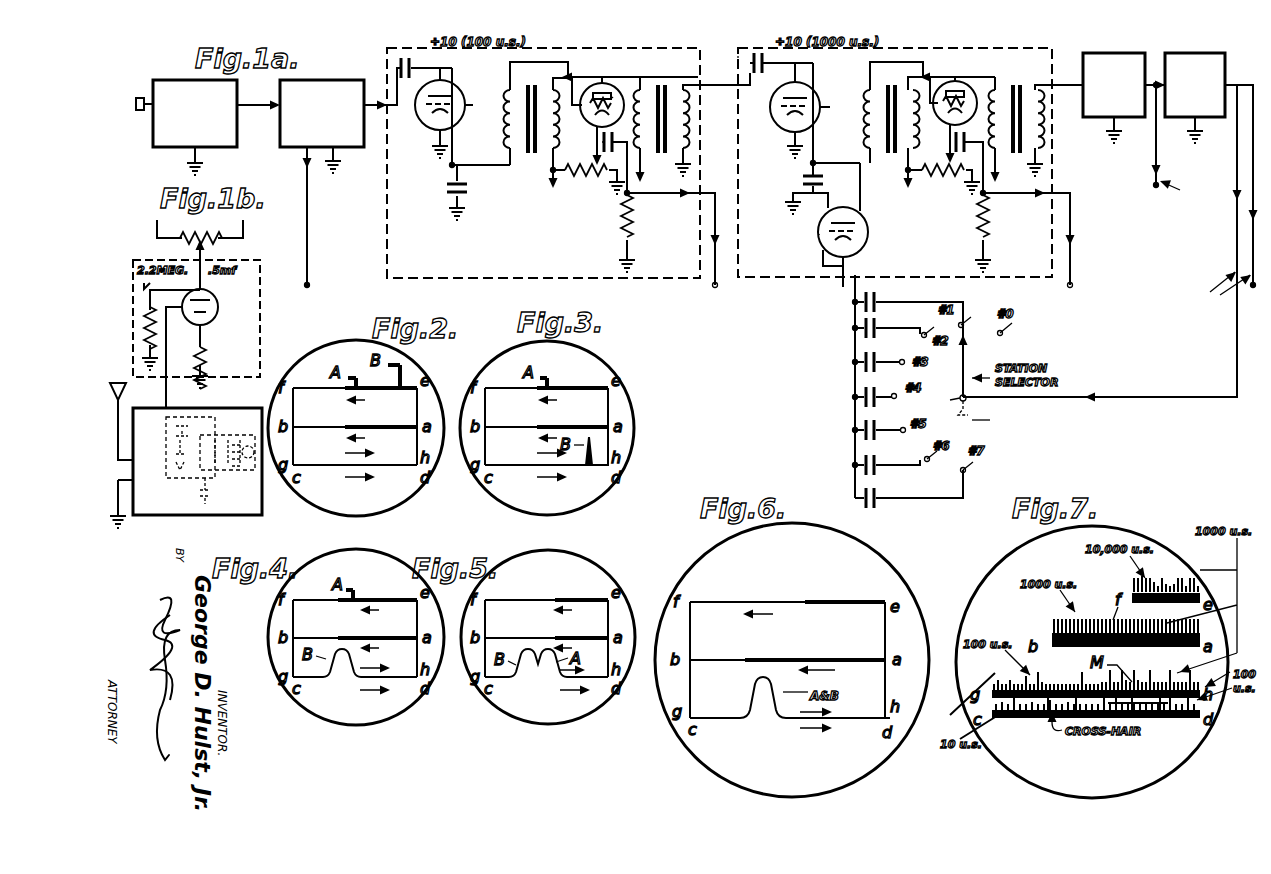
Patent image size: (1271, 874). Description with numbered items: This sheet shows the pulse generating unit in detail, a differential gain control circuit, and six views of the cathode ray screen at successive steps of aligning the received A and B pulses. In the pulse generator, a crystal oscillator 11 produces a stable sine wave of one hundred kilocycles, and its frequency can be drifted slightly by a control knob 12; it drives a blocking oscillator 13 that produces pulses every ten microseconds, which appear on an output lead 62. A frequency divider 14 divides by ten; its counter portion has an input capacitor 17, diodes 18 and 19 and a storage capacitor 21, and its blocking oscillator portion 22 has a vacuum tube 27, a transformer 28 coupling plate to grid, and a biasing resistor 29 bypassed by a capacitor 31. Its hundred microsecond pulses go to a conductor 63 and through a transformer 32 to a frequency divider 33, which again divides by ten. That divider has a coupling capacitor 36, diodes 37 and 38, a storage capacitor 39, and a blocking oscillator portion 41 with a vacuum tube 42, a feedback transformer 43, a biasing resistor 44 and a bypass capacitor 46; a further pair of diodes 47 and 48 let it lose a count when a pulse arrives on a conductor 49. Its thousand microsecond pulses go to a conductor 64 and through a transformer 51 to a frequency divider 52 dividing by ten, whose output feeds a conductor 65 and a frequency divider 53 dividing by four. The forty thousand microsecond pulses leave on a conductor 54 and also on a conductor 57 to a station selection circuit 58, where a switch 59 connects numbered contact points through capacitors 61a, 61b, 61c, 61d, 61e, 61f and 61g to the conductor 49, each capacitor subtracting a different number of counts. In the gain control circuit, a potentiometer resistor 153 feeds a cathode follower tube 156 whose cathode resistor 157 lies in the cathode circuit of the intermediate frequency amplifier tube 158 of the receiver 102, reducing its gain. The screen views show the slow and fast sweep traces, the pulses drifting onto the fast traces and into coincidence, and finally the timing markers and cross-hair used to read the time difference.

In FIG. 1A, the crystal oscillator 11 is at (170, 80).
In FIG. 1A, the control knob 12 is at (138, 110).
In FIG. 1A, the blocking oscillator 13 is at (327, 80).
In FIG. 1A, the frequency divider 14 is at (387, 48).
In FIG. 1A, the input capacitor 17 is at (412, 60).
In FIG. 1A, the diode 18 is at (424, 114).
In FIG. 1A, the diode 19 is at (480, 118).
In FIG. 1A, the storage capacitor 21 is at (447, 186).
In FIG. 1A, the blocking oscillator portion 22 is at (600, 74).
In FIG. 1A, the vacuum tube 27 is at (594, 120).
In FIG. 1A, the transformer 28 is at (528, 158).
In FIG. 1A, the biasing resistor 29 is at (588, 174).
In FIG. 1A, the capacitor 31 is at (612, 97).
In FIG. 1A, the transformer 32 is at (660, 79).
In FIG. 1A, the frequency divider 33 is at (738, 56).
In FIG. 1A, the coupling capacitor 36 is at (748, 88).
In FIG. 1A, the diode 37 is at (836, 114).
In FIG. 1A, the diode 38 is at (773, 110).
In FIG. 1A, the storage capacitor 39 is at (803, 179).
In FIG. 1A, the blocking oscillator portion 41 is at (953, 73).
In FIG. 1A, the vacuum tube 42 is at (952, 142).
In FIG. 1A, the feedback transformer 43 is at (886, 158).
In FIG. 1A, the biasing resistor 44 is at (940, 177).
In FIG. 1A, the bypass capacitor 46 is at (975, 101).
In FIG. 1A, the diode 47 is at (819, 234).
In FIG. 1A, the diode 48 is at (868, 232).
In FIG. 1A, the conductor 49 is at (855, 291).
In FIG. 1A, the output transformer 51 is at (1018, 80).
In FIG. 1A, the frequency divider 52 is at (1142, 53).
In FIG. 1A, the frequency divider 53 is at (1212, 53).
In FIG. 1A, the conductor 54 is at (1244, 80).
In FIG. 1A, the conductor 57 is at (1237, 168).
In FIG. 1A, the station selection circuit 58 is at (944, 399).
In FIG. 1A, the switch 59 is at (967, 340).
In FIG. 1A, the capacitor 61a is at (879, 297).
In FIG. 1A, the capacitor 61b is at (877, 326).
In FIG. 1A, the capacitor 61c is at (876, 360).
In FIG. 1A, the capacitor 61d is at (876, 395).
In FIG. 1A, the capacitor 61e is at (876, 428).
In FIG. 1A, the capacitor 61f is at (876, 463).
In FIG. 1A, the capacitor 61g is at (876, 497).
In FIG. 1A, the output lead 62 is at (307, 240).
In FIG. 1A, the conductor 63 is at (715, 268).
In FIG. 1A, the conductor 64 is at (1070, 250).
In FIG. 1A, the conductor 65 is at (1156, 157).
In FIG. 1B, the receiver 102 is at (230, 408).
In FIG. 1B, the potentiometer resistor 153 is at (170, 240).
In FIG. 1B, the cathode follower tube 156 is at (216, 306).
In FIG. 1B, the cathode resistor 157 is at (208, 354).
In FIG. 1B, the intermediate frequency amplifier tube 158 is at (211, 459).